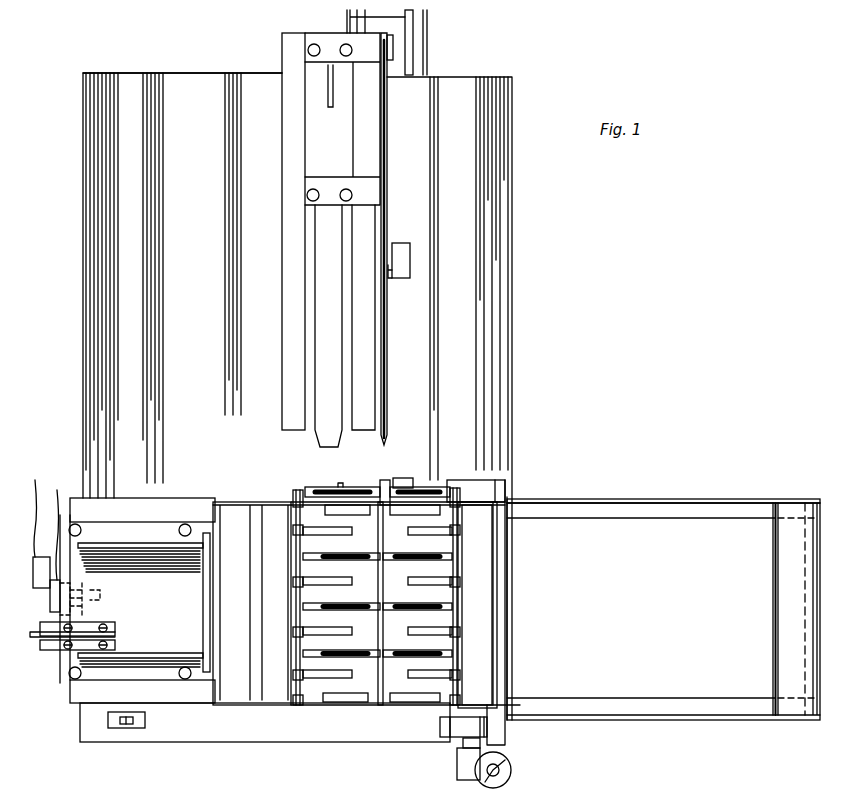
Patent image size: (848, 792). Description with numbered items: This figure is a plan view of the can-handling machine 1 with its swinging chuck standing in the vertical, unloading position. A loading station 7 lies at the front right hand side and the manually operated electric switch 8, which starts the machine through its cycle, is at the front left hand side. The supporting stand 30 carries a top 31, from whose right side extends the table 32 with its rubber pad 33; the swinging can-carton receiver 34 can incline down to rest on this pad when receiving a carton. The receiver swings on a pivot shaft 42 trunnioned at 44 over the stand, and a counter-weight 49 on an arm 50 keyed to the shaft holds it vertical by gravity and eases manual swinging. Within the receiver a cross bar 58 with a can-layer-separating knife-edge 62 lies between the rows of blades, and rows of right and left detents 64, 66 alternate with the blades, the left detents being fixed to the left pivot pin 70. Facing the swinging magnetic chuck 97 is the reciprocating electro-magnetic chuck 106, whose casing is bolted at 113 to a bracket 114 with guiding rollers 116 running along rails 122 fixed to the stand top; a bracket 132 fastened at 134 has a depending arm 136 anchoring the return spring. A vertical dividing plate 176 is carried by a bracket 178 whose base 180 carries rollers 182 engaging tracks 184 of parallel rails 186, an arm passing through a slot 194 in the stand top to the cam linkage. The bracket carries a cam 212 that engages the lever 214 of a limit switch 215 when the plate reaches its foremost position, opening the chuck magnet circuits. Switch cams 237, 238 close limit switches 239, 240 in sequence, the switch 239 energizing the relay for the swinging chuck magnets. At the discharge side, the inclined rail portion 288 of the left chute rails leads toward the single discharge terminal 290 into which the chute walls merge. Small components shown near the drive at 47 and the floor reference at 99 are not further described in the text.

The machine 1 is at (523, 323).
The loading station 7 is at (730, 490).
The electric switch 8 is at (127, 728).
The supporting stand 30 is at (145, 66).
The top 31 is at (97, 152).
The table 32 is at (634, 498).
The rubber pad 33 is at (773, 655).
The swinging can-carton receiver 34 is at (359, 713).
The pivot shaft 42 is at (457, 750).
The trunnion 44 is at (476, 480).
The gear box 47 is at (440, 725).
The counter-weight 49 is at (510, 768).
The arm 50 is at (505, 774).
The cross bar 58 is at (388, 637).
The knife-edge 62 is at (385, 688).
The right detents 64 is at (415, 530).
The left detents 66 is at (338, 527).
The left pivot pin 70 is at (305, 625).
The swinging magnetic chuck 97 is at (487, 722).
The floor 99 is at (578, 790).
The reciprocating electro-magnetic chuck 106 is at (275, 497).
The bolting 113 is at (200, 630).
The bracket 114 is at (92, 545).
The guiding rollers 116 is at (217, 503).
The rails 122 is at (172, 498).
The bracket 132 is at (106, 626).
The fastening 134 is at (112, 646).
The depending arm 136 is at (38, 640).
The dividing plate 176 is at (388, 325).
The bracket 178 is at (392, 164).
The base 180 is at (350, 135).
The rollers 182 is at (345, 43).
The tracks 184 is at (353, 134).
The rails 186 is at (282, 48).
The slot 194 is at (335, 447).
The cam 212 is at (395, 22).
The lever 214 is at (392, 278).
The limit switch 215 is at (410, 256).
The switch cam 237 is at (50, 603).
The switch cam 238 is at (87, 591).
The limit switch 239 is at (32, 506).
The limit switch 240 is at (56, 526).
The inclined rail portion 288 is at (427, 57).
The discharge terminal 290 is at (413, 38).